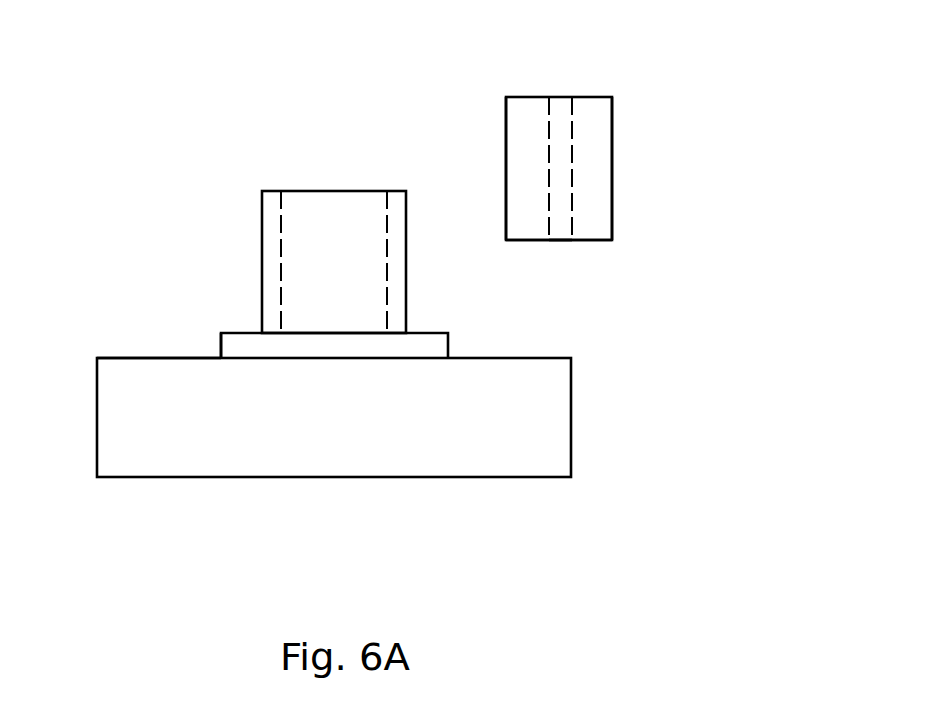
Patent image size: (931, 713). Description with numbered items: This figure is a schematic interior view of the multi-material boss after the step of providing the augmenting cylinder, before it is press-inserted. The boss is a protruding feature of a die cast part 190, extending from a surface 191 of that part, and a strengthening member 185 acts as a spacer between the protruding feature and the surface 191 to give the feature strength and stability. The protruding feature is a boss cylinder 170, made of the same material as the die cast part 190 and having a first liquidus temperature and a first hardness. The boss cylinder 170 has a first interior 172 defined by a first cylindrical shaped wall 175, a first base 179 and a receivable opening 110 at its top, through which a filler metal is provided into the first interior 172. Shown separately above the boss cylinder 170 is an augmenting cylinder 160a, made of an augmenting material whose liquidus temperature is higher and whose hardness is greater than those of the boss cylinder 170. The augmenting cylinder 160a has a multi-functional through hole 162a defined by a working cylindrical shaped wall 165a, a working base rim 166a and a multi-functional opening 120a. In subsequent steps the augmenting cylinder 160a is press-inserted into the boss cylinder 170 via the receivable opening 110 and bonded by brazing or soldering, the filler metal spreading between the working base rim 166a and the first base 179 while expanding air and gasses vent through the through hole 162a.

The receivable opening 110 is at (352, 140).
The boss cylinder 170 is at (262, 220).
The first cylindrical shaped wall 175 is at (282, 273).
The first interior 172 is at (257, 300).
The first base 179 is at (336, 335).
The die cast part 190 is at (571, 398).
The surface 191 is at (137, 357).
The strengthening member 185 is at (221, 343).
The multi-functional opening 120a is at (569, 72).
The augmenting cylinder 160a is at (600, 163).
The multi-functional through hole 162a is at (598, 189).
The working cylindrical shaped wall 165a is at (548, 222).
The working base rim 166a is at (533, 242).